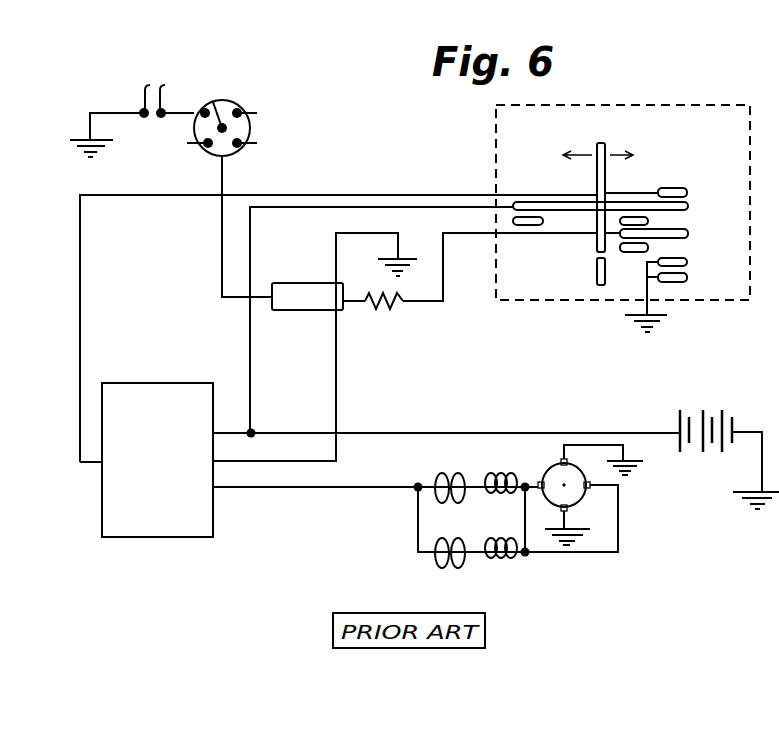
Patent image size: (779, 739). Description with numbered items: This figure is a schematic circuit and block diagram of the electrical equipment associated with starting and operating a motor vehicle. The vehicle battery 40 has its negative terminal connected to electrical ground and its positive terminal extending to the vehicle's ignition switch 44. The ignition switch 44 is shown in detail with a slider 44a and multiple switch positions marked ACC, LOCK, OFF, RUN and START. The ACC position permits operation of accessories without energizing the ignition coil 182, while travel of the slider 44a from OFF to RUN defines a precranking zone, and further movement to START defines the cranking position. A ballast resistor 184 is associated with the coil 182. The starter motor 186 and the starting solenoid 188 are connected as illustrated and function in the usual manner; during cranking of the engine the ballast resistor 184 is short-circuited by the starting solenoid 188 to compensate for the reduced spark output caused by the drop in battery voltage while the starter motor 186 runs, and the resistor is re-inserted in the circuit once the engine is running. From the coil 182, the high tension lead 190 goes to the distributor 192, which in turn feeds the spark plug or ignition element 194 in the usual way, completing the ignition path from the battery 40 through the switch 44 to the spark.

The spark plug or ignition element 194 is at (133, 93).
The distributor 192 is at (260, 127).
The ignition switch 44 is at (578, 250).
The slider 44a is at (597, 168).
The high tension lead 190 is at (217, 247).
The ignition coil 182 is at (320, 307).
The ballast resistor 184 is at (382, 315).
The starting solenoid 188 is at (198, 510).
The starter motor 186 is at (567, 560).
The vehicle battery 40 is at (693, 462).